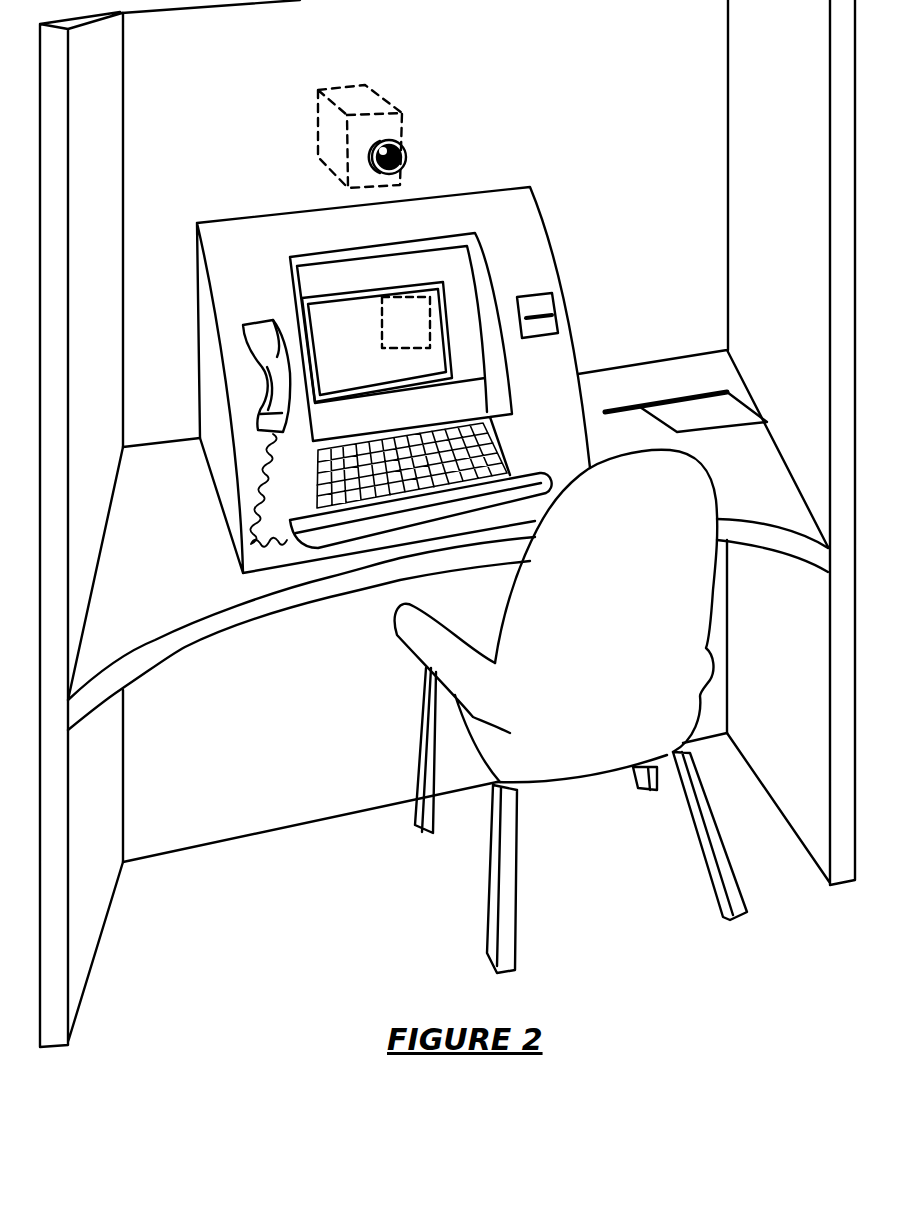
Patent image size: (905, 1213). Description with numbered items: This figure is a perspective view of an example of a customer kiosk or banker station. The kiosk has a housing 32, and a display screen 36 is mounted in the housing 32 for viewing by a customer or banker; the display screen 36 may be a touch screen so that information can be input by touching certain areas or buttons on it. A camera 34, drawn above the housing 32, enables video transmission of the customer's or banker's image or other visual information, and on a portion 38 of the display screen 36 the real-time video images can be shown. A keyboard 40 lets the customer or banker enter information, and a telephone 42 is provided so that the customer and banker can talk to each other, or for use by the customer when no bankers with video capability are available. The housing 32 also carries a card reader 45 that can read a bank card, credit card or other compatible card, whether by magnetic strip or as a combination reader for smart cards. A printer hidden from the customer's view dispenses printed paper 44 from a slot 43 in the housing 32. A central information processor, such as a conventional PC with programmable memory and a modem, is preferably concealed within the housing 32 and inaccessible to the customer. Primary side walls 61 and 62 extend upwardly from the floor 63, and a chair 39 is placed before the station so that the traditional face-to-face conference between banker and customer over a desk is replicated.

The housing 32 is at (555, 390).
The camera 34 is at (378, 99).
The display screen 36 is at (376, 300).
The portion of the display screen 38 is at (406, 322).
The chair 39 is at (571, 711).
The keyboard 40 is at (494, 420).
The telephone 42 is at (277, 327).
The slot 43 is at (672, 395).
The printed paper 44 is at (740, 418).
The card reader 45 is at (547, 295).
The primary side wall 61 is at (103, 910).
The primary side wall 62 is at (807, 679).
The floor 63 is at (400, 967).